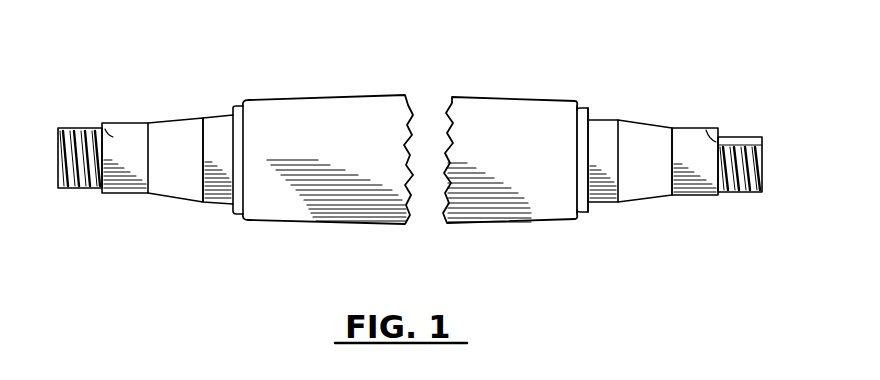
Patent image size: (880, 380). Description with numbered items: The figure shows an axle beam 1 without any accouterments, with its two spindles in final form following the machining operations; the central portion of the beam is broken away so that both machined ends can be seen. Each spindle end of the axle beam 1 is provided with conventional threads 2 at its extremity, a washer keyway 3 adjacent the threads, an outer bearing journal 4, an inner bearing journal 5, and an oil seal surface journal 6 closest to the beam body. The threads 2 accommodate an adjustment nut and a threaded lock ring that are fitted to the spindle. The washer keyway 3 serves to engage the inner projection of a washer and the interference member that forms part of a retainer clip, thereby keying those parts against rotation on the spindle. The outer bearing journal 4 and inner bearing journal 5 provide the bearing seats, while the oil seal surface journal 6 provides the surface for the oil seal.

The axle beam 1 is at (426, 144).
The threads 2 is at (741, 193).
The washer keyway 3 is at (718, 128).
The outer bearing journal 4 is at (696, 196).
The inner bearing journal 5 is at (604, 120).
The oil seal surface journal 6 is at (579, 108).